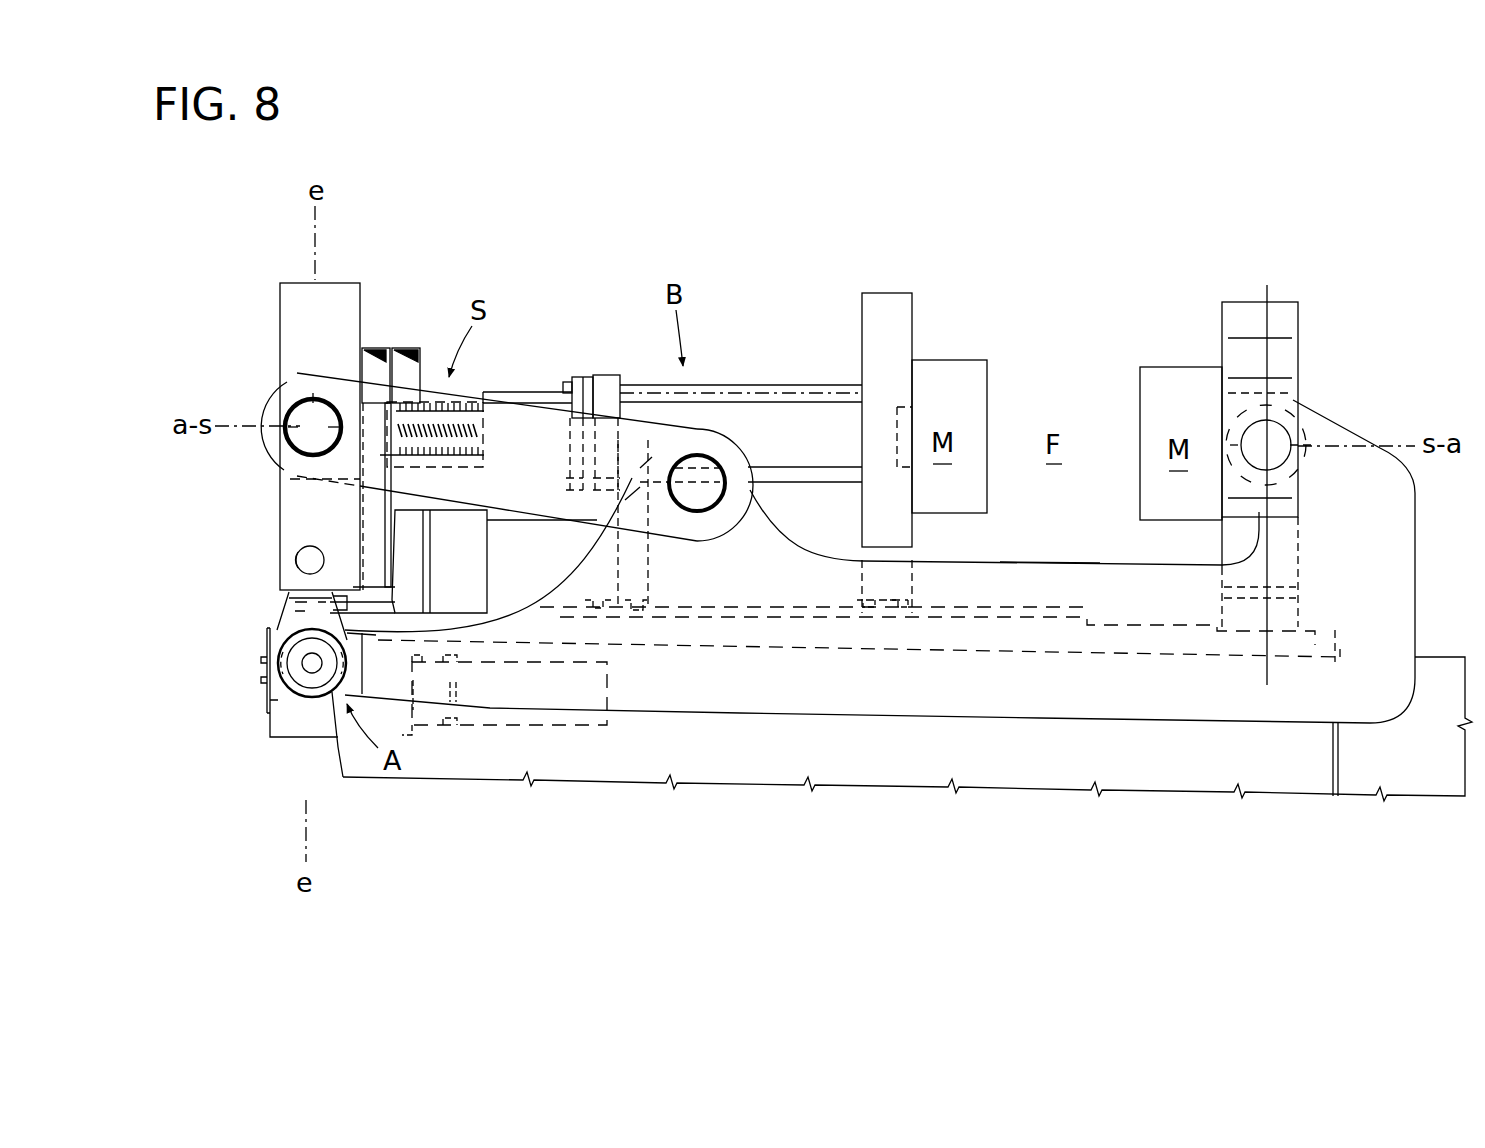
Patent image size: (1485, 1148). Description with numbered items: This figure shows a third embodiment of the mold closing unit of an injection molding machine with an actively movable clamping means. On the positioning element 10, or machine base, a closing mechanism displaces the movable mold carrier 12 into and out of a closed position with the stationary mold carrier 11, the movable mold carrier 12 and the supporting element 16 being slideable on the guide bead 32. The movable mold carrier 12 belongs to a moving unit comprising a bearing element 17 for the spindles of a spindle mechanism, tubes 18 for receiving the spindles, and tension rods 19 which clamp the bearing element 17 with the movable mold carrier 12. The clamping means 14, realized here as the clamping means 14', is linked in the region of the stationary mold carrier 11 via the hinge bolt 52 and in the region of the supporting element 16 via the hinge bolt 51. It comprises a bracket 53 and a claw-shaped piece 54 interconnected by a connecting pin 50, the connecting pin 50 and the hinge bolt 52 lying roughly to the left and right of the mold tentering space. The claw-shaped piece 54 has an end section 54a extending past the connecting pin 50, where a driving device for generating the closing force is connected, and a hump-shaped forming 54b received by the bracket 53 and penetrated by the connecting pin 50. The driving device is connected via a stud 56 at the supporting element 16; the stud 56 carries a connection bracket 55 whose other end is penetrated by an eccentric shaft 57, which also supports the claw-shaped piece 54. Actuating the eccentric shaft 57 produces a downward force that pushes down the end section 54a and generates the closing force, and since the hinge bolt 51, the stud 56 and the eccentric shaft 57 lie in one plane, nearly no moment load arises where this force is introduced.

The positioning element 10 is at (243, 803).
The stationary mold carrier 11 is at (1285, 316).
The movable mold carrier 12 is at (887, 307).
The center line / pivot axis 14 is at (1262, 477).
The clamping means 14' is at (627, 782).
The supporting element 16 is at (347, 297).
The bearing element 17 is at (607, 380).
The tubes 18 is at (725, 420).
The tension rods 19 is at (812, 396).
The guide bead 32 is at (1030, 588).
The connecting pin 50 is at (708, 490).
The hinge bolt 51 is at (311, 410).
The hinge bolt 52 is at (1278, 434).
The bracket 53 is at (533, 450).
The claw-shaped piece 54 is at (778, 698).
The end section 54a is at (479, 692).
The hump-shaped forming 54b is at (763, 528).
The connection bracket 55 is at (290, 615).
The stud 56 is at (296, 558).
The eccentric shaft 57 is at (352, 663).